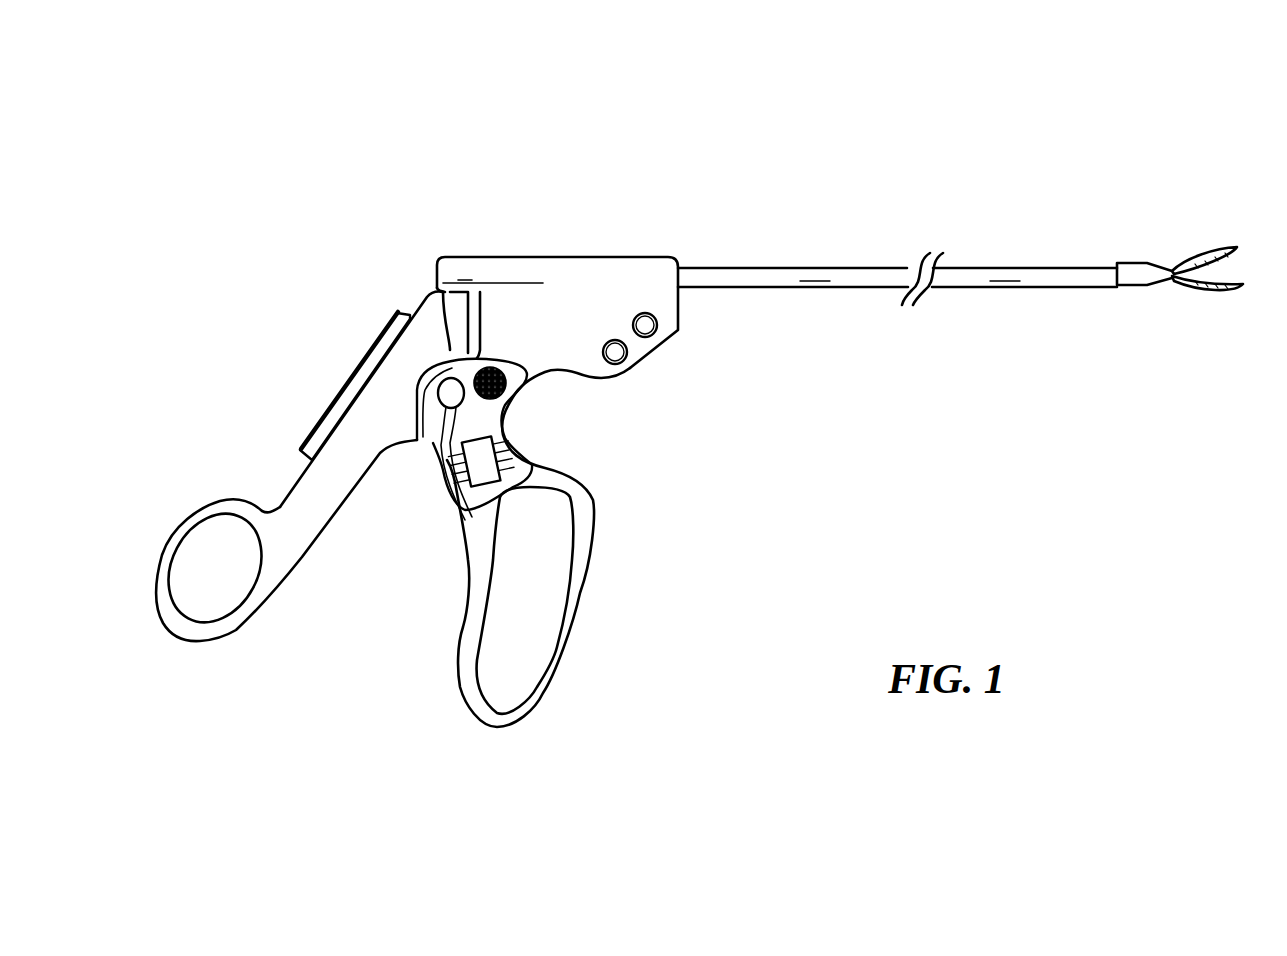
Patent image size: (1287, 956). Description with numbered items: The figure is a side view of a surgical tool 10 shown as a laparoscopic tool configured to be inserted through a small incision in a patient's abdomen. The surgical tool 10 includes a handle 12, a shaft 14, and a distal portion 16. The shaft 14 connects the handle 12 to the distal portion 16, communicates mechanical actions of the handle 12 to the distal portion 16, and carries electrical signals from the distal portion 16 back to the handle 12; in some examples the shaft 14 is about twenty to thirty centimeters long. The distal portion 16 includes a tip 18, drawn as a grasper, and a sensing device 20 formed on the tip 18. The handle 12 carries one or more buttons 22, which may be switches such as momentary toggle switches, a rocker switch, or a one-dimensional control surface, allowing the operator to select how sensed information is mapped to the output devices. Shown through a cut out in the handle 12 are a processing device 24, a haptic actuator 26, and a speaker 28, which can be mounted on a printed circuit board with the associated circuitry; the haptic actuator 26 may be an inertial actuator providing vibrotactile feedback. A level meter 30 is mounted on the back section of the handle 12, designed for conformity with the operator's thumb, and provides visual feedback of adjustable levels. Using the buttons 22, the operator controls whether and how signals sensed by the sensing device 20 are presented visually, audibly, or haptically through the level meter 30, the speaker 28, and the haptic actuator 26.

The surgical tool 10 is at (296, 284).
The handle 12 is at (543, 258).
The shaft 14 is at (793, 288).
The distal portion 16 is at (1090, 167).
The tip 18 is at (1200, 252).
The sensing device 20 is at (1212, 292).
The buttons 22 is at (657, 336).
The processing device 24 is at (467, 506).
The haptic actuator 26 is at (433, 443).
The speaker 28 is at (508, 408).
The level meter 30 is at (342, 385).